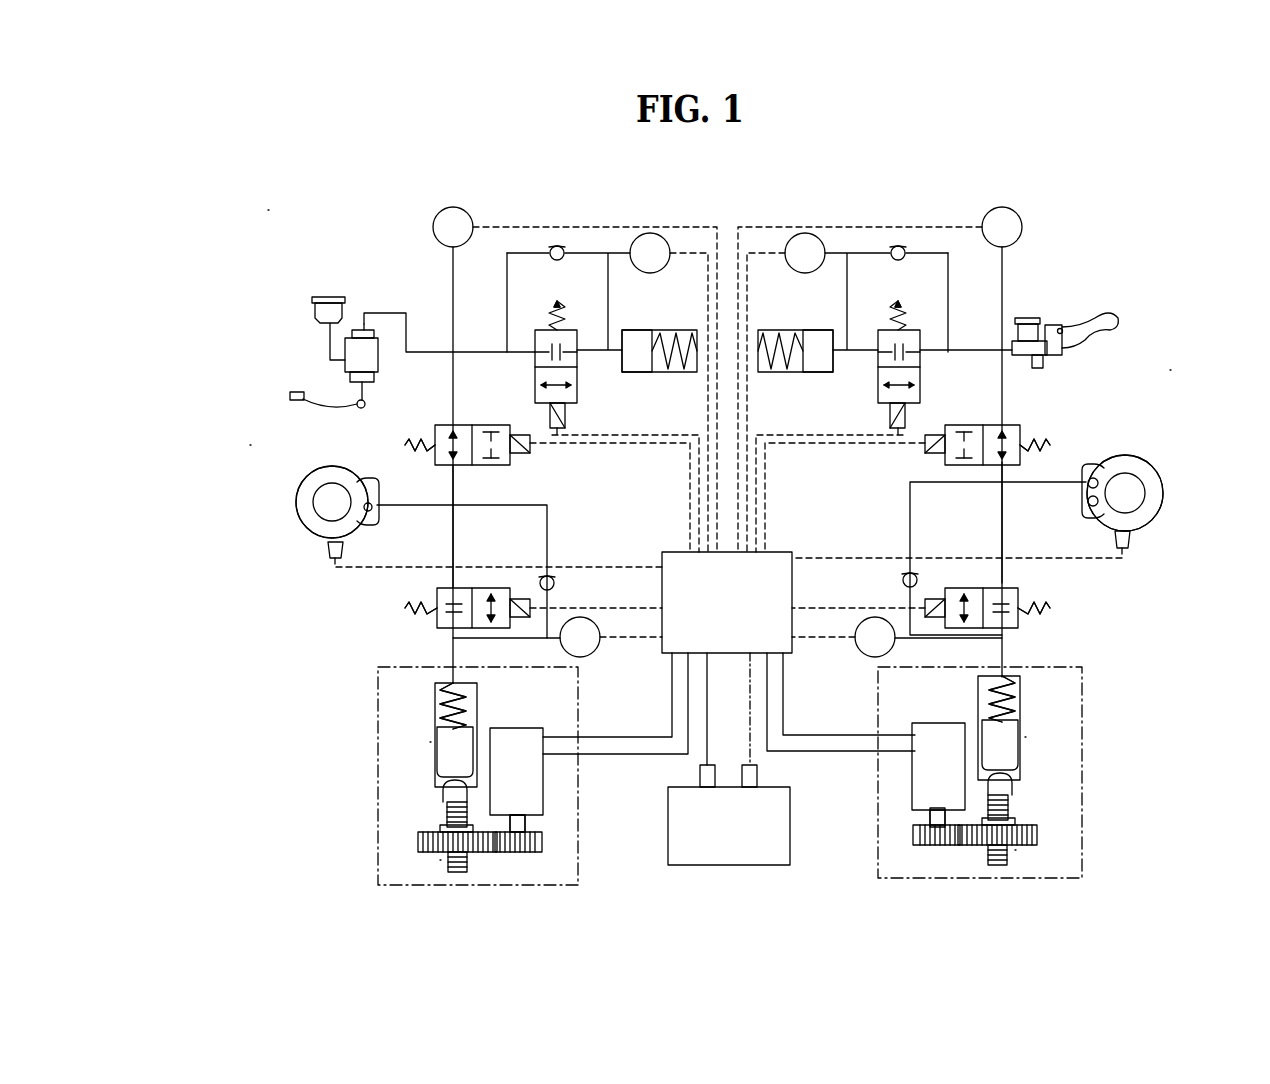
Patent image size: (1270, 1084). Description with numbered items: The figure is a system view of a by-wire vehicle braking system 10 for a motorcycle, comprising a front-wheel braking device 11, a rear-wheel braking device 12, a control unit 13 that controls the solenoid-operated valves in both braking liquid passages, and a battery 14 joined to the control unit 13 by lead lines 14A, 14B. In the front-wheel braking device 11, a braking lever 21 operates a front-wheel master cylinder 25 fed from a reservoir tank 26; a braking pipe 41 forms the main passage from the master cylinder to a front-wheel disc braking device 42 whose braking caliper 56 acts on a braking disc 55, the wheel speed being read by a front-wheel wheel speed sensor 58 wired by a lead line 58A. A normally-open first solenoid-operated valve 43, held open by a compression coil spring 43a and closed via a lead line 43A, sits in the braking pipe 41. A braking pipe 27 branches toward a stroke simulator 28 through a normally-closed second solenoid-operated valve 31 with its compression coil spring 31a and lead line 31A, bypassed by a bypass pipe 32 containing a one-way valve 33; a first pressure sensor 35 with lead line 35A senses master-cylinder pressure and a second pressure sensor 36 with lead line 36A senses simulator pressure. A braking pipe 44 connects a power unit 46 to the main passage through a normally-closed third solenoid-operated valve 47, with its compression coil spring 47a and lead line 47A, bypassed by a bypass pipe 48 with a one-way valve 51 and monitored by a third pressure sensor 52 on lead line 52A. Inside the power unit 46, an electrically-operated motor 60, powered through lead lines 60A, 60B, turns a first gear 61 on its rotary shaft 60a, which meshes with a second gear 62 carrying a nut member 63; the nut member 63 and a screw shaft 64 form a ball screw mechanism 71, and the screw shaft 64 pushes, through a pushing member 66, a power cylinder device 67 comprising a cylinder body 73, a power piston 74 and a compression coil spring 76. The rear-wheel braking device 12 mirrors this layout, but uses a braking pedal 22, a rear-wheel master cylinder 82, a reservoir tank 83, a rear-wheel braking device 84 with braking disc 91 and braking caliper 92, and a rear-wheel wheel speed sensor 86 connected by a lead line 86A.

The braking system 10 is at (266, 206).
The front-wheel braking device 11 is at (1175, 367).
The rear-wheel braking device 12 is at (245, 440).
The control unit 13 is at (672, 560).
The battery 14 is at (726, 866).
The lead line 14A is at (705, 770).
The lead line 14B is at (752, 770).
The braking lever 21 is at (1090, 326).
The braking pedal 22 is at (287, 394).
The front-wheel master cylinder 25 is at (1037, 370).
The reservoir tank 26 is at (1030, 316).
The braking pipe 27 is at (475, 350).
The stroke simulator 28 is at (672, 330).
The second solenoid-operated valve 31 is at (535, 383).
The compression coil spring 31a is at (557, 301).
The lead line 31A is at (645, 433).
The bypass pipe 32 is at (506, 250).
The one-way valve 33 is at (553, 246).
The first pressure sensor 35 is at (448, 207).
The lead line 35A is at (600, 226).
The second pressure sensor 36 is at (648, 232).
The lead line 36A is at (688, 226).
The braking pipe 41 is at (453, 398).
The front-wheel disc braking device 42 is at (1168, 460).
The first solenoid-operated valve 43 is at (505, 465).
The compression coil spring 43a is at (408, 447).
The lead line 43A is at (690, 445).
The braking pipe 44 is at (453, 575).
The power unit 46 is at (378, 690).
The third solenoid-operated valve 47 is at (440, 628).
The compression coil spring 47a is at (408, 610).
The lead line 47A is at (628, 600).
The bypass pipe 48 is at (548, 518).
The one-way valve 51 is at (556, 583).
The third pressure sensor 52 is at (592, 656).
The lead line 52A is at (625, 641).
The braking disc 55 is at (1164, 497).
The braking caliper 56 is at (1083, 497).
The front-wheel wheel speed sensor 58 is at (1131, 540).
The lead line 58A is at (1125, 562).
The electrically-operated motor 60 is at (517, 728).
The rotary shaft 60a is at (525, 832).
The lead line 60A is at (633, 755).
The lead line 60B is at (618, 737).
The first gear 61 is at (518, 858).
The second gear 62 is at (416, 845).
The nut member 63 is at (445, 815).
The screw shaft 64 is at (457, 875).
The pushing member 66 is at (443, 798).
The power cylinder device 67 is at (425, 742).
The ball screw mechanism 71 is at (432, 862).
The cylinder body 73 is at (437, 710).
The power piston 74 is at (455, 760).
The compression coil spring 76 is at (440, 690).
The rear-wheel master cylinder 82 is at (372, 362).
The reservoir tank 83 is at (319, 295).
The rear-wheel braking device 84 is at (289, 480).
The rear-wheel wheel speed sensor 86 is at (328, 550).
The lead line 86A is at (335, 570).
The braking disc 91 is at (297, 510).
The braking caliper 92 is at (380, 490).